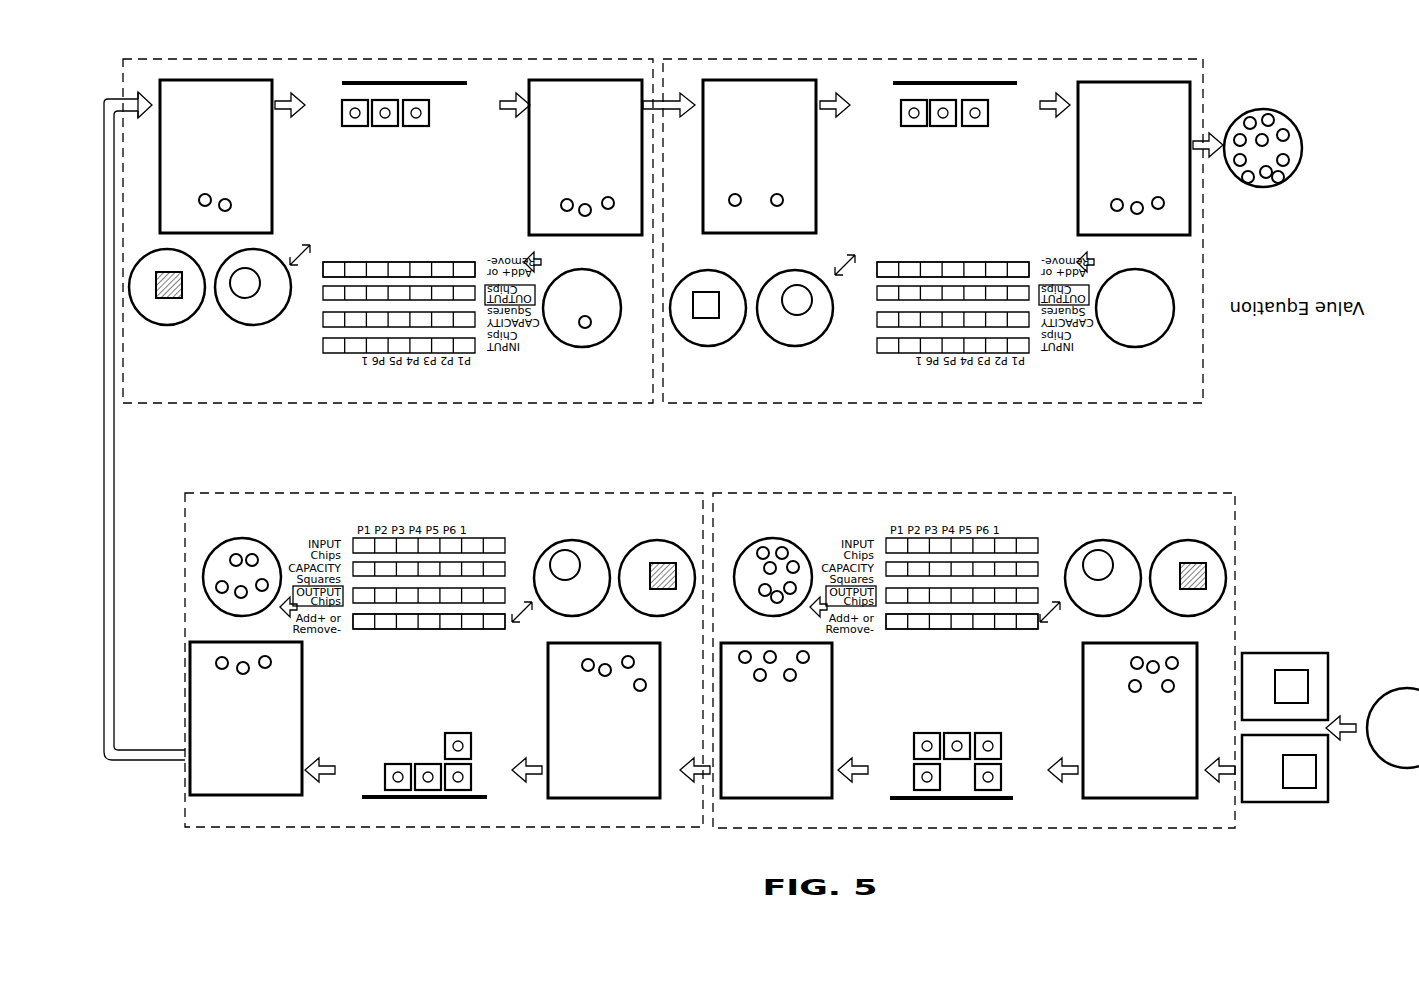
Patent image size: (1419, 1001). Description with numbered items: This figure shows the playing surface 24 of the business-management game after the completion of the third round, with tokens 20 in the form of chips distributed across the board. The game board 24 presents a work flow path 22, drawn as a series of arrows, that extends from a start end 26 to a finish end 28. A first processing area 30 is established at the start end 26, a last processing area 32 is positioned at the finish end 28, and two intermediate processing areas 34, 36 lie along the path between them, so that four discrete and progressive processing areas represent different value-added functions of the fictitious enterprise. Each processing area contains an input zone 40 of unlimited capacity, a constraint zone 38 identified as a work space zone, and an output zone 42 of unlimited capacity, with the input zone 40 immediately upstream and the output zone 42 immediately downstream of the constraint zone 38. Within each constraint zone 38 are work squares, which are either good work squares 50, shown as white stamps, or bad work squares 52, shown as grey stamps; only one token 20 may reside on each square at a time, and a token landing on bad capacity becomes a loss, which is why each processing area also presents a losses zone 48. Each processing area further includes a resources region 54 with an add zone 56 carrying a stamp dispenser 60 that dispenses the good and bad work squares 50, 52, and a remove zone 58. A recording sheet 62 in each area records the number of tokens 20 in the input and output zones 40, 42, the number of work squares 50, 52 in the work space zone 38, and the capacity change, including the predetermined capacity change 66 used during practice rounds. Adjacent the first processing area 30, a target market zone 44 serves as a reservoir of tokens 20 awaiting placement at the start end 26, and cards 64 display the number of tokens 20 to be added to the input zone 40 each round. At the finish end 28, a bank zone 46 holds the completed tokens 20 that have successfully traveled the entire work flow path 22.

The tokens 20 is at (416, 105).
The work flow path 22 is at (290, 93).
The playing surface 24 is at (1290, 500).
The start end 26 is at (1190, 680).
The finish end 28 is at (1192, 215).
The first processing area 30 is at (1037, 500).
The last processing area 32 is at (1035, 398).
The intermediate processing area 34 is at (502, 500).
The intermediate processing area 36 is at (462, 398).
The constraint zone 38 is at (440, 82).
The input zone 40 is at (250, 160).
The output zone 42 is at (540, 160).
The target market zone 44 is at (1395, 692).
The bank zone 46 is at (1302, 148).
The losses zone 48 is at (588, 348).
The good work square 50 is at (342, 113).
The bad work square 52 is at (165, 272).
The resources region 54 is at (217, 400).
The add zone 56 is at (280, 318).
The remove zone 58 is at (172, 325).
The stamp dispenser 60 is at (252, 270).
The recording sheet 62 is at (385, 352).
The cards 64 is at (1290, 672).
The predetermined capacity change 66 is at (440, 262).